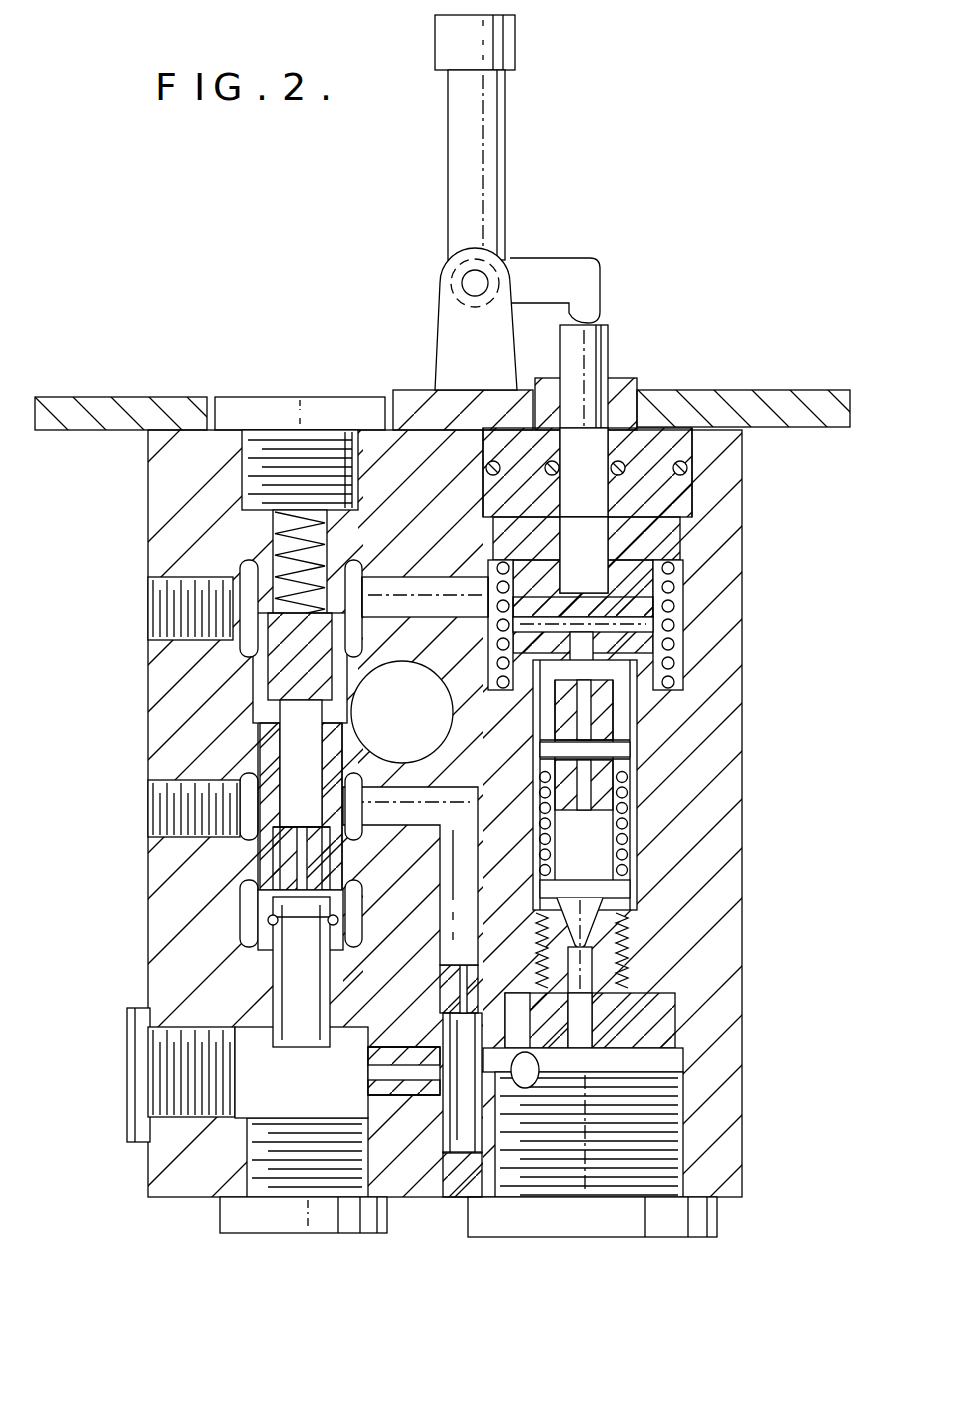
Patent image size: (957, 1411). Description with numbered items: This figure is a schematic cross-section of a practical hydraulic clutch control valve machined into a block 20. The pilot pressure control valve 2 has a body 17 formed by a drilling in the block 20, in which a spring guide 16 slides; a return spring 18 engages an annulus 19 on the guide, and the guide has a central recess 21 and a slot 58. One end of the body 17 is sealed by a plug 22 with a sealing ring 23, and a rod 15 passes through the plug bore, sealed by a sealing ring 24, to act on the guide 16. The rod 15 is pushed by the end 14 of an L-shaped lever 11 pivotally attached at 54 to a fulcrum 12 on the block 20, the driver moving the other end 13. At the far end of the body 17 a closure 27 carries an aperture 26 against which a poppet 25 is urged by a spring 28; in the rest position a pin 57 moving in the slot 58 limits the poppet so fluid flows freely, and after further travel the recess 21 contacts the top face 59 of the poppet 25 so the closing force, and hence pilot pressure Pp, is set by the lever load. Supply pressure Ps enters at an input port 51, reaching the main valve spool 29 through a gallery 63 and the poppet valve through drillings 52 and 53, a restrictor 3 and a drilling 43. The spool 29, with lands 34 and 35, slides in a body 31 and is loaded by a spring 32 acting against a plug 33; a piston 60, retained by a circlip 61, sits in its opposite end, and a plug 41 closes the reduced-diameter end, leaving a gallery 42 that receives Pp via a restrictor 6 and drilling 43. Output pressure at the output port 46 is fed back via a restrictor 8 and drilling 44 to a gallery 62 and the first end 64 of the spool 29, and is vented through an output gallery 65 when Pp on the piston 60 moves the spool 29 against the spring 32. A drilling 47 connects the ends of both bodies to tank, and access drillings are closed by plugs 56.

The pilot pressure control valve 2 is at (455, 505).
The restrictor 3 is at (462, 990).
The restrictor 6 is at (410, 1070).
The restrictor 8 is at (290, 862).
The lever 11 is at (478, 175).
The fulcrum 12 is at (465, 335).
The lever end 13 is at (483, 42).
The lever end 14 is at (580, 278).
The rod 15 is at (583, 352).
The spring guide 16 is at (645, 538).
The pilot valve body 17 is at (670, 800).
The return spring 18 is at (630, 675).
The annulus 19 is at (600, 600).
The block 20 is at (172, 478).
The central recess 21 is at (612, 680).
The plug 22 is at (650, 490).
The sealing ring 23 is at (693, 475).
The sealing ring 24 is at (690, 465).
The poppet 25 is at (618, 892).
The aperture 26 is at (600, 965).
The closure 27 is at (625, 1015).
The spring 28 is at (635, 862).
The spool 29 is at (285, 655).
The main valve body 31 is at (205, 710).
The spring 32 is at (285, 553).
The plug 33 is at (260, 485).
The land 34 is at (240, 620).
The land 35 is at (262, 843).
The plug 41 is at (262, 1213).
The gallery 42 is at (300, 1080).
The drilling 43 is at (588, 1058).
The drilling 44 is at (347, 897).
The output port 46 is at (425, 700).
The drilling 47 is at (405, 595).
The input port 51 is at (243, 815).
The drilling 52 is at (410, 805).
The drilling 53 is at (511, 1075).
The pivot 54 is at (470, 280).
The plugs 56 is at (665, 1222).
The pin 57 is at (640, 796).
The slot 58 is at (615, 753).
The top face 59 is at (612, 718).
The piston 60 is at (288, 978).
The circlip 61 is at (258, 925).
The gallery 62 is at (245, 790).
The gallery 63 is at (245, 718).
The first end 64 is at (350, 930).
The output gallery 65 is at (393, 635).
The supply pressure Ps is at (175, 808).
The pilot valve pressure Pp is at (640, 1100).